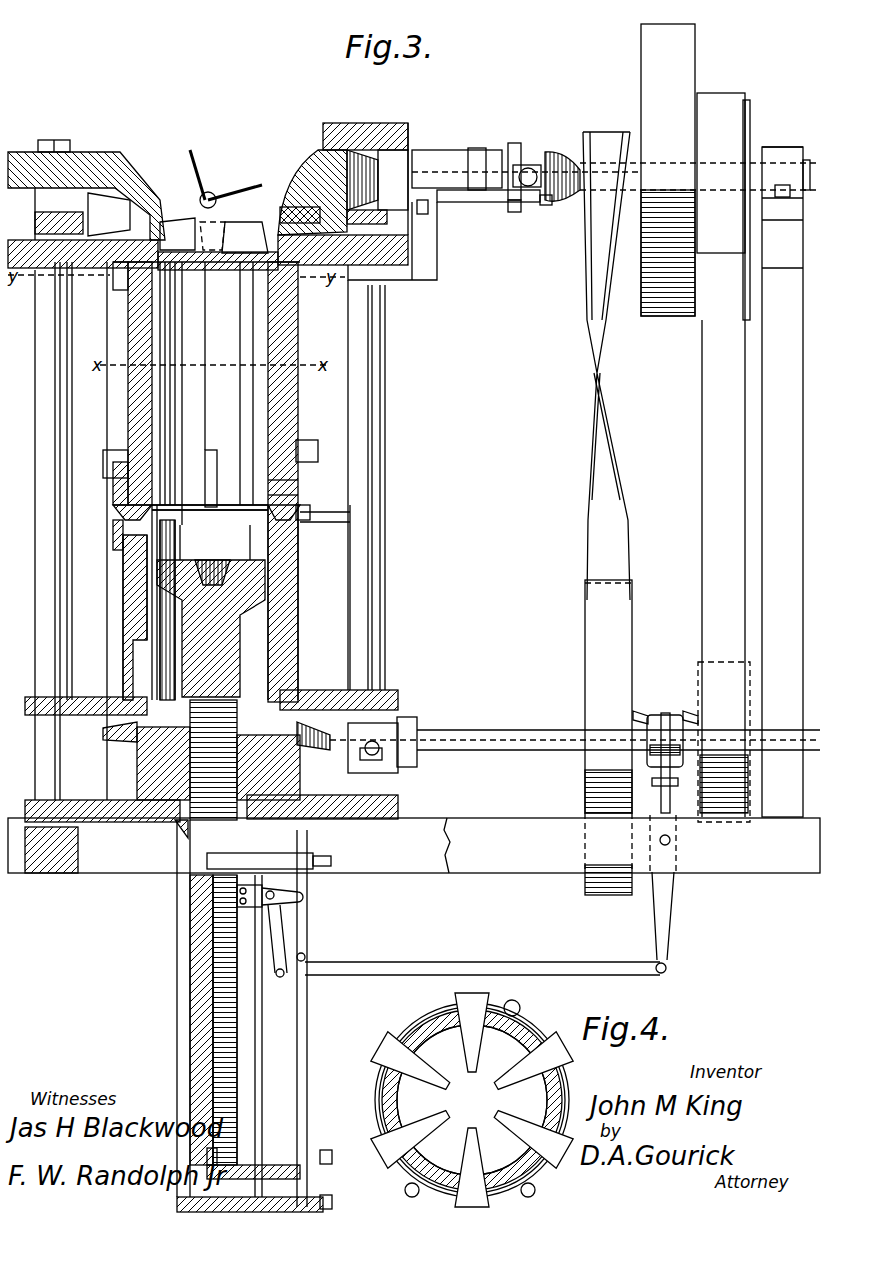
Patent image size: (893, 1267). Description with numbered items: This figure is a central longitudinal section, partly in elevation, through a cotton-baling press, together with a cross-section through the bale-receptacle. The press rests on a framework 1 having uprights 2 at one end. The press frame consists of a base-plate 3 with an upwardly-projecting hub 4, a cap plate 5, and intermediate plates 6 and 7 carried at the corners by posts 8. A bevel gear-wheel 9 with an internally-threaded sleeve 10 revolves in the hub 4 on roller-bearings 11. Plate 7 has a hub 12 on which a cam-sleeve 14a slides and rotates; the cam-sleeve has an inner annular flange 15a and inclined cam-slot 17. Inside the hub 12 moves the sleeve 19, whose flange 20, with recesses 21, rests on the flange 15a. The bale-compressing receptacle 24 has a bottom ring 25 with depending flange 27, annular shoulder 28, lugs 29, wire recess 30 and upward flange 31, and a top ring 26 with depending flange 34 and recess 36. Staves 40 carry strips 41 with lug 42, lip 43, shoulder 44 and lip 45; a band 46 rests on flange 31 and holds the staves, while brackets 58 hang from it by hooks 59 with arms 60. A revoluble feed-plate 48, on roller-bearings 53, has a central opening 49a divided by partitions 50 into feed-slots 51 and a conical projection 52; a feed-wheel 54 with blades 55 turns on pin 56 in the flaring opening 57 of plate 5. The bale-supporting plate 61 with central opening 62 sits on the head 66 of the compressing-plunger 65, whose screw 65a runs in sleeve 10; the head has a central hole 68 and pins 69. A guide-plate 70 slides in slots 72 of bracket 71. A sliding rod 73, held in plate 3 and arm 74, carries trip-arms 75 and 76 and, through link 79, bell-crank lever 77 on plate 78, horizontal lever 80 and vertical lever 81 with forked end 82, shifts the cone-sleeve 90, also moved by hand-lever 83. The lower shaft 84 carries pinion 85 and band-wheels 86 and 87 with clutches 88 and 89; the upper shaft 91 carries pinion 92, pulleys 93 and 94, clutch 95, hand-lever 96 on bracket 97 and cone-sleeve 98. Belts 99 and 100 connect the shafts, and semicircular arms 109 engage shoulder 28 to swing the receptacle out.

In FIG. 3, the framework 1 is at (493, 856).
In FIG. 3, the uprights 2 is at (786, 482).
In FIG. 3, the base-plate 3 is at (40, 404).
In FIG. 3, the hub 4 is at (145, 775).
In FIG. 3, the top or cap plate 5 is at (408, 135).
In FIG. 3, the intermediate plate 6 is at (400, 262).
In FIG. 3, the intermediate plate 7 is at (398, 700).
In FIG. 3, the posts 8 is at (368, 358).
In FIG. 3, the bevel gear-wheel 9 is at (103, 735).
In FIG. 3, the internally-screw-threaded sleeve 10 is at (172, 832).
In FIG. 3, the roller-bearings 11 is at (140, 745).
In FIG. 3, the hub 12 is at (350, 663).
In FIG. 3, the cam-sleeve 14a is at (300, 628).
In FIG. 3, the inner annular flange 15a is at (300, 522).
In FIG. 3, the inclined cam-slot 17 is at (123, 560).
In FIG. 3, the sleeve 19 is at (133, 600).
In FIG. 3, the flange 20 is at (120, 540).
In FIG. 3, the recesses 21 is at (115, 530).
In FIG. 3, the bale-compressing chamber or receptacle 24 is at (300, 392).
In FIG. 4, the bale-compressing chamber or receptacle 24 is at (560, 1080).
In FIG. 3, the bottom ring 25 is at (298, 500).
In FIG. 3, the top ring 26 is at (408, 283).
In FIG. 3, the downwardly-depending flange 27 is at (300, 512).
In FIG. 3, the annular shoulder 28 is at (118, 514).
In FIG. 3, the pins or lugs 29 is at (268, 512).
In FIG. 3, the annular recess 30 is at (300, 482).
In FIG. 3, the upwardly-projecting flange 31 is at (120, 508).
In FIG. 3, the downwardly-depending flange 34 is at (160, 288).
In FIG. 3, the annular recess 36 is at (170, 292).
In FIG. 3, the staves or slats 40 is at (128, 405).
In FIG. 4, the staves or slats 40 is at (390, 1085).
In FIG. 3, the strip 41 is at (120, 425).
In FIG. 4, the strip 41 is at (380, 1100).
In FIG. 3, the lug 42 is at (175, 295).
In FIG. 3, the lip 43 is at (125, 498).
In FIG. 3, the shoulder 44 is at (165, 290).
In FIG. 3, the upwardly-projecting lip 45 is at (125, 278).
In FIG. 3, the band 46 is at (305, 440).
In FIG. 4, the band 46 is at (385, 1130).
In FIG. 3, the revoluble feed-plate 48 is at (40, 226).
In FIG. 3, the central opening 49a is at (300, 160).
In FIG. 3, the partitions 50 is at (180, 225).
In FIG. 3, the angular feed-slots 51 is at (240, 230).
In FIG. 3, the conical projection 52 is at (296, 290).
In FIG. 3, the roller-bearings 53 is at (100, 203).
In FIG. 3, the feed-wheel 54 is at (200, 175).
In FIG. 3, the blades 55 is at (215, 190).
In FIG. 3, the screw or pin 56 is at (215, 200).
In FIG. 3, the flaring opening 57 is at (140, 165).
In FIG. 3, the brackets 58 is at (170, 452).
In FIG. 4, the brackets 58 is at (395, 1035).
In FIG. 3, the hook 59 is at (103, 452).
In FIG. 3, the arm 60 is at (160, 505).
In FIG. 4, the arm 60 is at (470, 1125).
In FIG. 3, the bale-supporting plate 61 is at (248, 590).
In FIG. 3, the central opening 62 is at (222, 560).
In FIG. 3, the compressing-plunger 65 is at (240, 668).
In FIG. 3, the screw 65a is at (195, 1003).
In FIG. 3, the head 66 is at (125, 620).
In FIG. 3, the central hole 68 is at (201, 519).
In FIG. 3, the pins or lugs 69 is at (217, 542).
In FIG. 3, the guide-plate 70 is at (220, 1160).
In FIG. 3, the bracket 71 is at (177, 1058).
In FIG. 3, the vertical slots 72 is at (177, 1204).
In FIG. 3, the vertically-sliding rod 73 is at (297, 1048).
In FIG. 3, the arm 74 is at (332, 1203).
In FIG. 3, the upper trip-arm 75 is at (313, 860).
In FIG. 3, the lower trip-arm 76 is at (325, 1160).
In FIG. 3, the bell-crank lever 77 is at (282, 930).
In FIG. 3, the plate 78 is at (300, 578).
In FIG. 3, the link 79 is at (300, 895).
In FIG. 3, the horizontal lever 80 is at (500, 962).
In FIG. 3, the vertical lever 81 is at (668, 895).
In FIG. 3, the forked upper end 82 is at (665, 715).
In FIG. 3, the hand-lever 83 is at (655, 783).
In FIG. 3, the lower driving-shaft 84 is at (505, 732).
In FIG. 3, the pinion 85 is at (345, 765).
In FIG. 3, the large band or pulley wheel 86 is at (585, 685).
In FIG. 3, the small band or pulley wheel 87 is at (700, 665).
In FIG. 3, the friction-clutch 88 is at (638, 714).
In FIG. 3, the friction-clutch 89 is at (692, 712).
In FIG. 3, the cone-sleeve 90 is at (650, 745).
In FIG. 3, the upper drive-shaft 91 is at (498, 160).
In FIG. 3, the pinion 92 is at (362, 165).
In FIG. 3, the large pulley-wheel 93 is at (641, 132).
In FIG. 3, the small pulley-wheel 94 is at (748, 120).
In FIG. 3, the friction-clutch 95 is at (572, 150).
In FIG. 3, the forked hand-lever 96 is at (565, 200).
In FIG. 3, the bracket 97 is at (500, 202).
In FIG. 3, the cone-sleeve 98 is at (528, 165).
In FIG. 3, the belt 99 is at (592, 487).
In FIG. 3, the belt 100 is at (702, 472).
In FIG. 3, the semicircular arms 109 is at (118, 538).